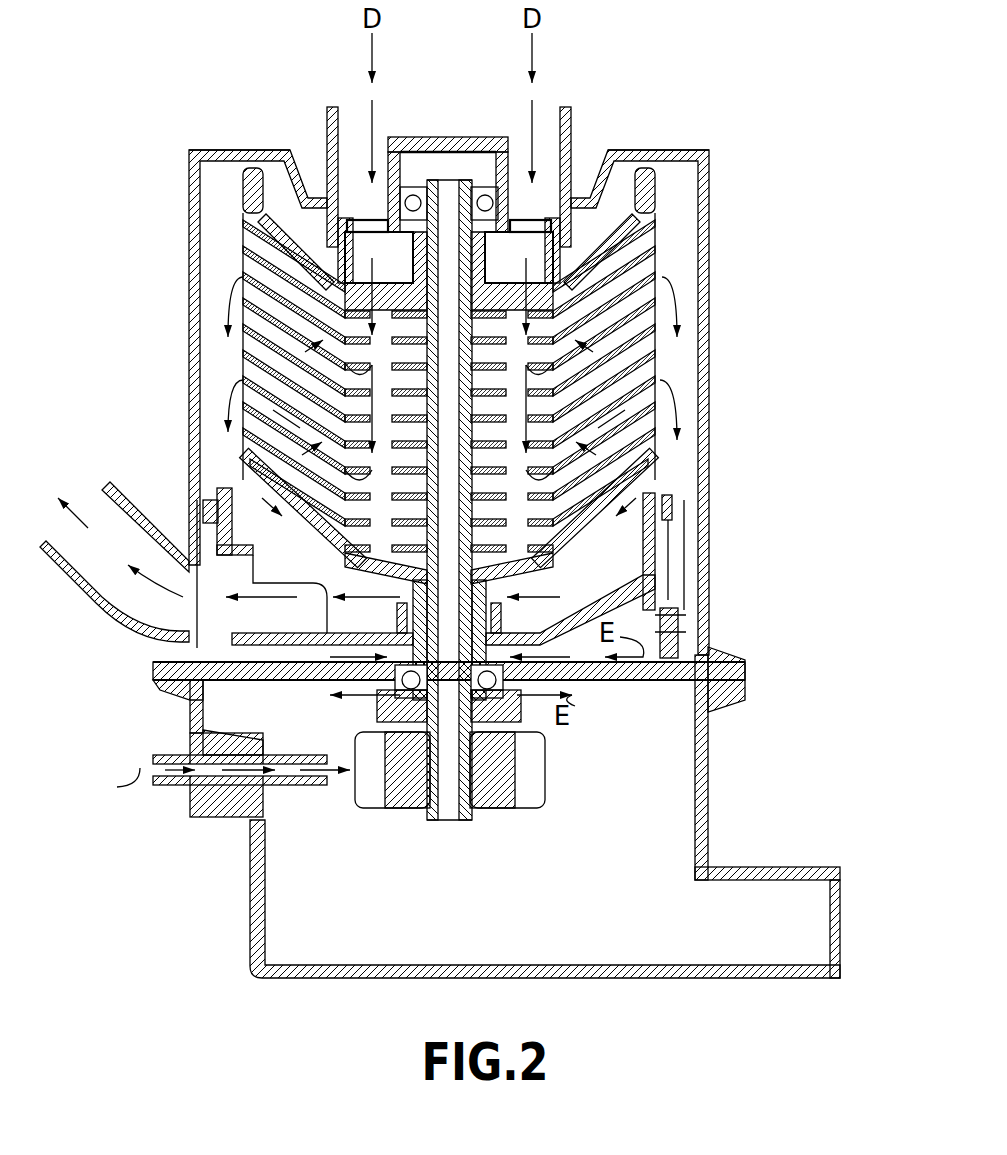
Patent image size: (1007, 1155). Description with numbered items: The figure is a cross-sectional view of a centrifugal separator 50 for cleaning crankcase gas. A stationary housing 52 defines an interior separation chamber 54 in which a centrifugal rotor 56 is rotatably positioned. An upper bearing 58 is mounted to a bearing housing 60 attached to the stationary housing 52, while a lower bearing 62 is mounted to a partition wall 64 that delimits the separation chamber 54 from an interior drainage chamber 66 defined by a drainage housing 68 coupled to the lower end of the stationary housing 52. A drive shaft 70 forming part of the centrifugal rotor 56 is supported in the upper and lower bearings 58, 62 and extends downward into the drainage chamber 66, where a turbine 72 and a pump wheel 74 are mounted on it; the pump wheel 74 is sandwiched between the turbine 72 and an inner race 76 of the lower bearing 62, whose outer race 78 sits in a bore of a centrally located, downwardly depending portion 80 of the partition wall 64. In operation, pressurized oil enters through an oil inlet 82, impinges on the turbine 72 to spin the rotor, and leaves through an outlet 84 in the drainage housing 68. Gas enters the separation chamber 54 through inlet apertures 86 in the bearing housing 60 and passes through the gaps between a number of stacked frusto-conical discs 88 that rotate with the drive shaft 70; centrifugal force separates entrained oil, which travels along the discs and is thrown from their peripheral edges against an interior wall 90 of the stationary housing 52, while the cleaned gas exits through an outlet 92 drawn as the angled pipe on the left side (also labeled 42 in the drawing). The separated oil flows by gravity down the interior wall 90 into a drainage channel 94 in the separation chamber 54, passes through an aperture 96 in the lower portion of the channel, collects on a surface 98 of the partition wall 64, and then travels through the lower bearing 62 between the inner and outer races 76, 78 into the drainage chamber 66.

The outlet pipe 42 is at (114, 542).
The centrifugal separator 50 is at (470, 348).
The stationary housing 52 is at (687, 152).
The separation chamber 54 is at (690, 190).
The centrifugal rotor 56 is at (667, 364).
The upper bearing 58 is at (420, 183).
The bearing housing 60 is at (502, 137).
The lower bearing 62 is at (525, 712).
The partition wall 64 is at (620, 684).
The drainage chamber 66 is at (574, 912).
The drainage housing 68 is at (713, 703).
The drive shaft 70 is at (470, 178).
The turbine 72 is at (482, 808).
The pump wheel 74 is at (383, 708).
The inner race 76 is at (393, 808).
The outer race 78 is at (397, 625).
The downwardly depending portion 80 is at (410, 692).
The oil inlet 82 is at (203, 820).
The outlet 84 is at (754, 932).
The inlet apertures 86 is at (368, 213).
The frusto-conical discs 88 is at (243, 222).
The interior wall 90 is at (690, 380).
The outlet 92 is at (110, 520).
The drainage channel 94 is at (232, 507).
The aperture 96 is at (652, 624).
The surface 98 is at (587, 660).